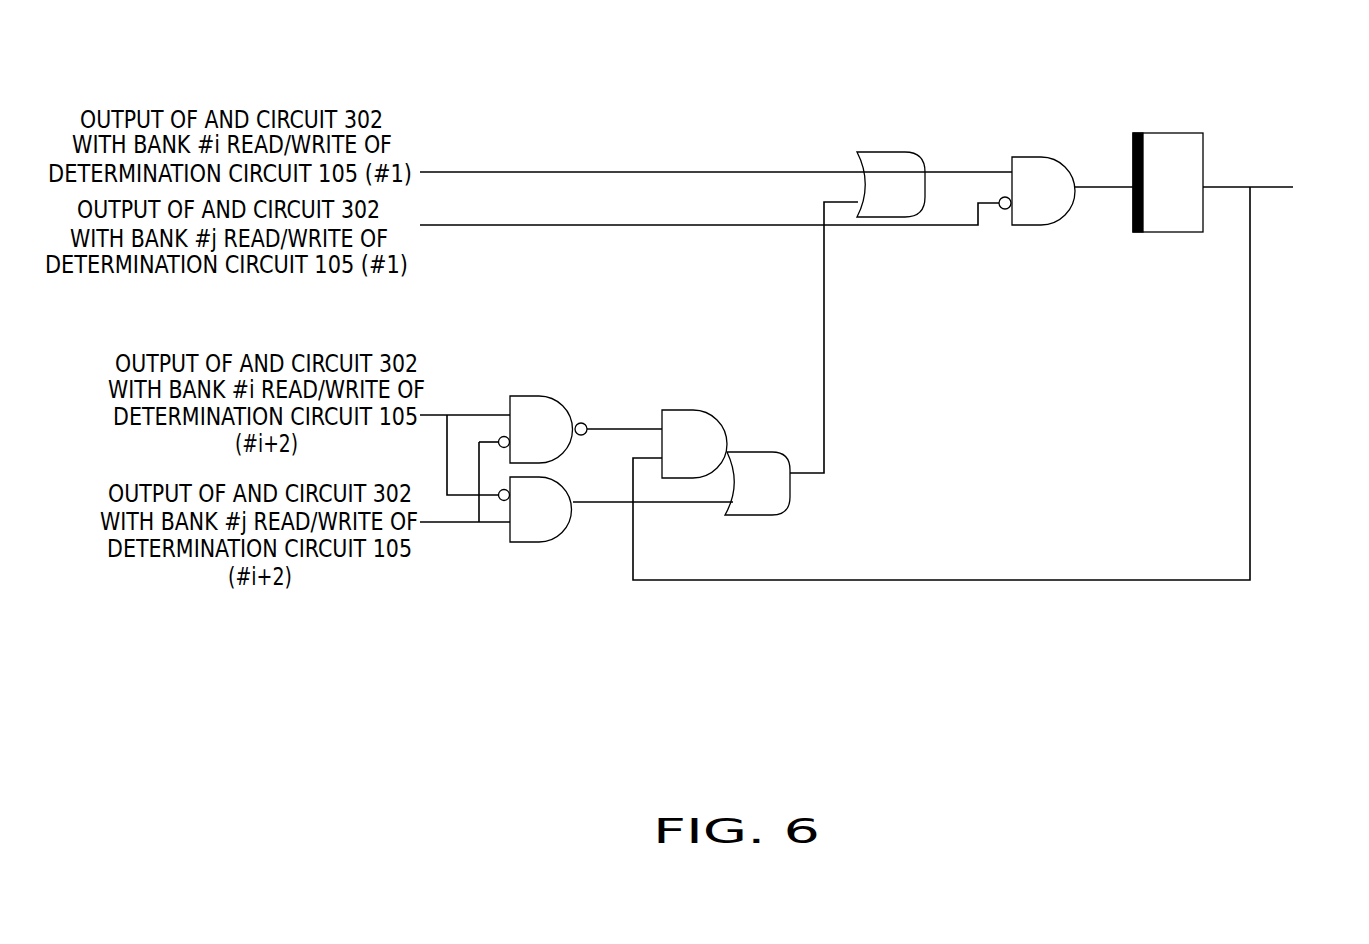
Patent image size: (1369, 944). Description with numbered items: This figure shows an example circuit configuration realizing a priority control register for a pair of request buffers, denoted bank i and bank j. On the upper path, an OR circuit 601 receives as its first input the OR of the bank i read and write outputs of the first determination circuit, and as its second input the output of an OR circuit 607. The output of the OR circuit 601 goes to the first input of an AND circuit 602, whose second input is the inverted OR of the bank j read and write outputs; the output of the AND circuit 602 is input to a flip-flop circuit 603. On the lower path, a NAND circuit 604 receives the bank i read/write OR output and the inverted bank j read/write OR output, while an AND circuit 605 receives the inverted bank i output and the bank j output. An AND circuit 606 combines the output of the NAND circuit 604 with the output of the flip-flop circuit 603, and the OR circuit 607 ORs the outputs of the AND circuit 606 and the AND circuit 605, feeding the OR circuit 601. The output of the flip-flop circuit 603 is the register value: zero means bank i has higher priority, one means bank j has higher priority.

The OR circuit 601 is at (878, 148).
The AND circuit 602 is at (1025, 152).
The flip-flop circuit 603 is at (1155, 130).
The NAND circuit 604 is at (535, 392).
The AND circuit 605 is at (527, 545).
The AND circuit 606 is at (683, 408).
The OR circuit 607 is at (747, 452).